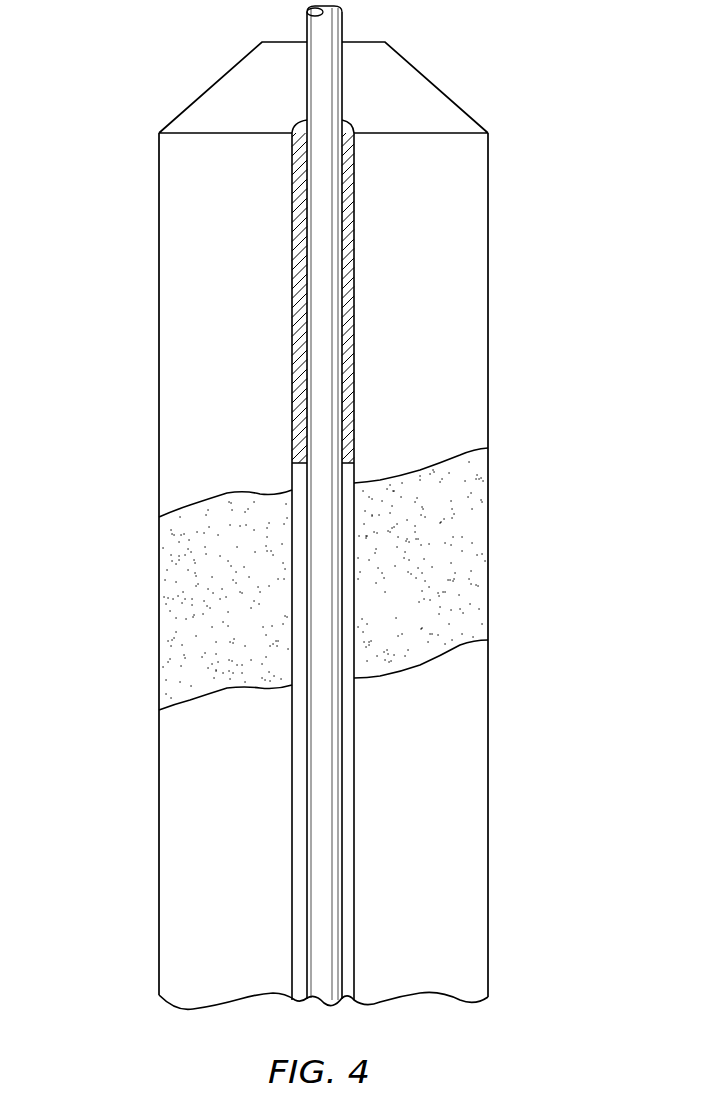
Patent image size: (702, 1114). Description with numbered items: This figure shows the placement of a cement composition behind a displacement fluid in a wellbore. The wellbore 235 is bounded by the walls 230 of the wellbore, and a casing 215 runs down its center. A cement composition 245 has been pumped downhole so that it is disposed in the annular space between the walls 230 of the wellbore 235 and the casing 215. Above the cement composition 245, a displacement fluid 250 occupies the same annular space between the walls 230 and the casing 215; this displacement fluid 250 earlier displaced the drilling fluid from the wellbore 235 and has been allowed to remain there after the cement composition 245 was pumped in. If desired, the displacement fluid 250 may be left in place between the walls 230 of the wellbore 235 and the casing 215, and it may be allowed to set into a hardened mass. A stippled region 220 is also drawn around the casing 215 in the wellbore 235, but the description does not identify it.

The displacement fluid 250 is at (293, 248).
The casing 215 is at (342, 230).
The walls of the wellbore 230 is at (355, 196).
The wellbore 235 is at (356, 273).
The cement composition 245 is at (297, 575).
The porous layer 220 is at (444, 531).